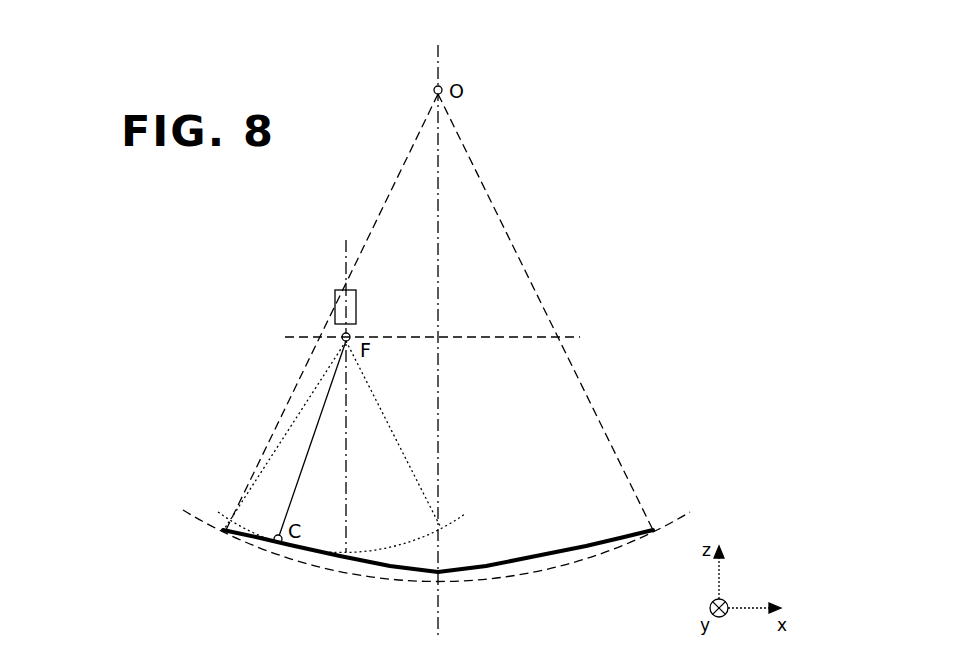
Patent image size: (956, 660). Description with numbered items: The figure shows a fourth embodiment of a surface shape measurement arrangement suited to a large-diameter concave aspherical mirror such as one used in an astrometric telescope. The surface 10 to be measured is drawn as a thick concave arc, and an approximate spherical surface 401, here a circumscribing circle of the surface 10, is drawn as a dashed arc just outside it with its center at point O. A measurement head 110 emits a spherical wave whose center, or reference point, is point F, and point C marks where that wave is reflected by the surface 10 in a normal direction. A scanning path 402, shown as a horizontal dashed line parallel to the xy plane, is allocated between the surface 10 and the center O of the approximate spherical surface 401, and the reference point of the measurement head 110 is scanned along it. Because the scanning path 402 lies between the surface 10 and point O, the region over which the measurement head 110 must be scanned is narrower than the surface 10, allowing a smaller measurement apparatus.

The surface to be measured 10 is at (593, 540).
The measurement head 110 is at (335, 289).
The approximate spherical surface 401 is at (668, 518).
The scanning path 402 is at (535, 337).